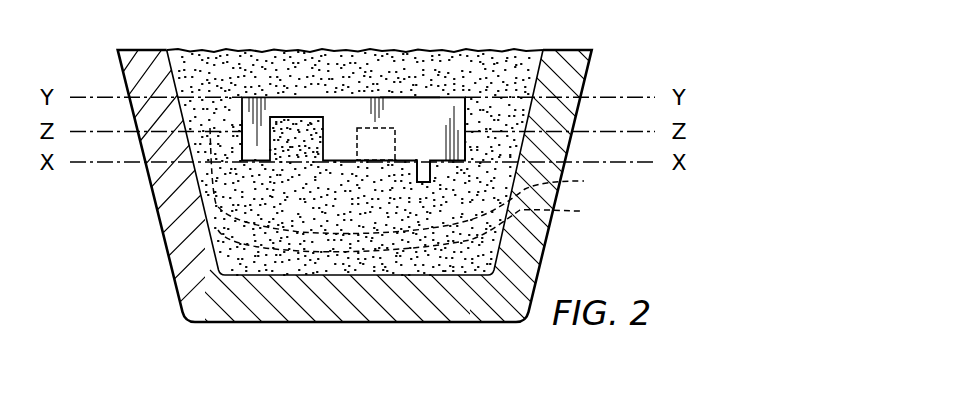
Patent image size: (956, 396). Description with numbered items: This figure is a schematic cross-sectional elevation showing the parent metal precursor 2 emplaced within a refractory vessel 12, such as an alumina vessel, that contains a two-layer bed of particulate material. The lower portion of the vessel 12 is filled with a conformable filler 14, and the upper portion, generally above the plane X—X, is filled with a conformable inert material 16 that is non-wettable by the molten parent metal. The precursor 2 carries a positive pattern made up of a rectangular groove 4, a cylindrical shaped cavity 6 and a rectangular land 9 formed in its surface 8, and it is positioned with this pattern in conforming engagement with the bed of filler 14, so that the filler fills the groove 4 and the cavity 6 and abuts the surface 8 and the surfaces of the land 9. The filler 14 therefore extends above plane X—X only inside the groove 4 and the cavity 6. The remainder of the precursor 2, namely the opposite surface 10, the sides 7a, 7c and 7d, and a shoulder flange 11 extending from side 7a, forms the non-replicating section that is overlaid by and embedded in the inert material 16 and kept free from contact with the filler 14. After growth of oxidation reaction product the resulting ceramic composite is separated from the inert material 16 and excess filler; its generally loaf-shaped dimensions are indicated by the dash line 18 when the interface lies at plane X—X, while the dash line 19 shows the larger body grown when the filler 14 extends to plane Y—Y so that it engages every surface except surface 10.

The parent metal precursor 2 is at (325, 90).
The rectangular groove 4 is at (283, 142).
The cylindrical shaped cavity 6 is at (395, 129).
The side 7a is at (241, 117).
The side 7c is at (491, 160).
The side 7d is at (349, 122).
The surface 8 is at (456, 161).
The rectangular land 9 is at (412, 183).
The surface 10 is at (410, 96).
The shoulder flange 11 is at (242, 154).
The refractory vessel 12 is at (539, 279).
The conformable filler 14 is at (360, 219).
The inert material 16 is at (378, 82).
The dash line 18 is at (370, 341).
The dash line 19 is at (305, 343).